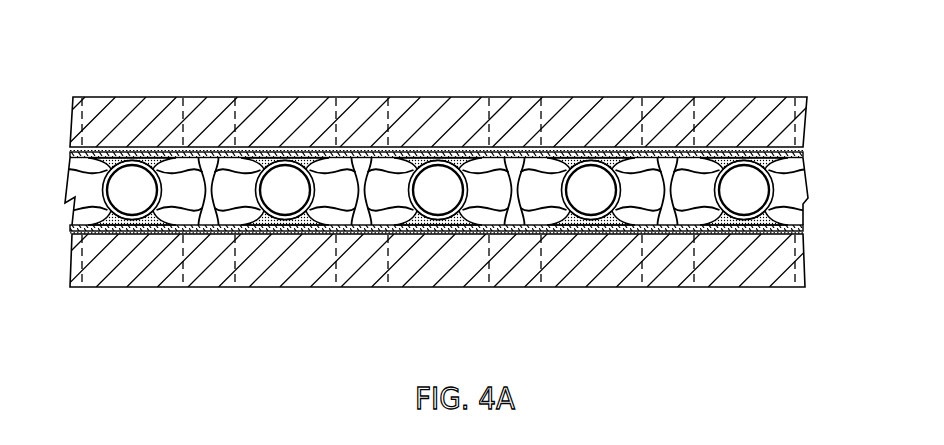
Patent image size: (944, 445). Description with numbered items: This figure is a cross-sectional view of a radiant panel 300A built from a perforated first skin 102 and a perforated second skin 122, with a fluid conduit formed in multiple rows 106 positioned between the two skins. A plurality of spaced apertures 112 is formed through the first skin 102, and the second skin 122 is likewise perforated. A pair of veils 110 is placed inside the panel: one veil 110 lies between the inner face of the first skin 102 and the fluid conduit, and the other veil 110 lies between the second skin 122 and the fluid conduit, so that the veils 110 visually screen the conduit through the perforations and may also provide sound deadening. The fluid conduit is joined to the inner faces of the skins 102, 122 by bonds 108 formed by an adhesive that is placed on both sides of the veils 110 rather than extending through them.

The radiant panel 300A is at (797, 74).
The first skin 102 is at (70, 259).
The second skin 122 is at (70, 108).
The rows 106 is at (177, 160).
The bonds 108 is at (127, 156).
The veils 110 is at (238, 170).
The apertures 112 is at (178, 281).